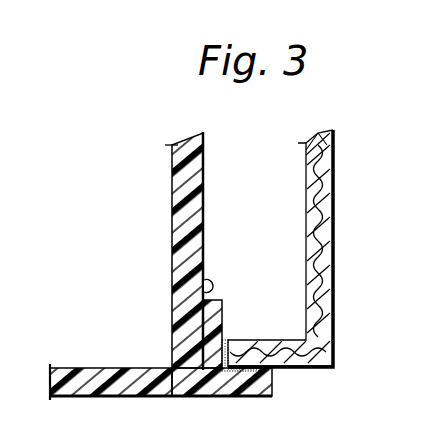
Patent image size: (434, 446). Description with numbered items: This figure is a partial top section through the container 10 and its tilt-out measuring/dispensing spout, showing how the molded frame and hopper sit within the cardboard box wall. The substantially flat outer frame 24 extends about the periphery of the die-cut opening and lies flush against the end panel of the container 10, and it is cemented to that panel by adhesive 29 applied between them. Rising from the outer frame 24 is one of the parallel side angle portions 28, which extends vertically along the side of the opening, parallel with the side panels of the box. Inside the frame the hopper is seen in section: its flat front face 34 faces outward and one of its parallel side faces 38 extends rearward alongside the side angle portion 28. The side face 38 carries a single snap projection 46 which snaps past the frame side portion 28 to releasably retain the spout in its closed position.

The container 10 is at (334, 279).
The outer frame 24 is at (227, 398).
The side angle portion 28 is at (222, 318).
The adhesive 29 is at (268, 373).
The front face 34 is at (95, 398).
The side face 38 is at (170, 214).
The snap projection 46 is at (212, 282).